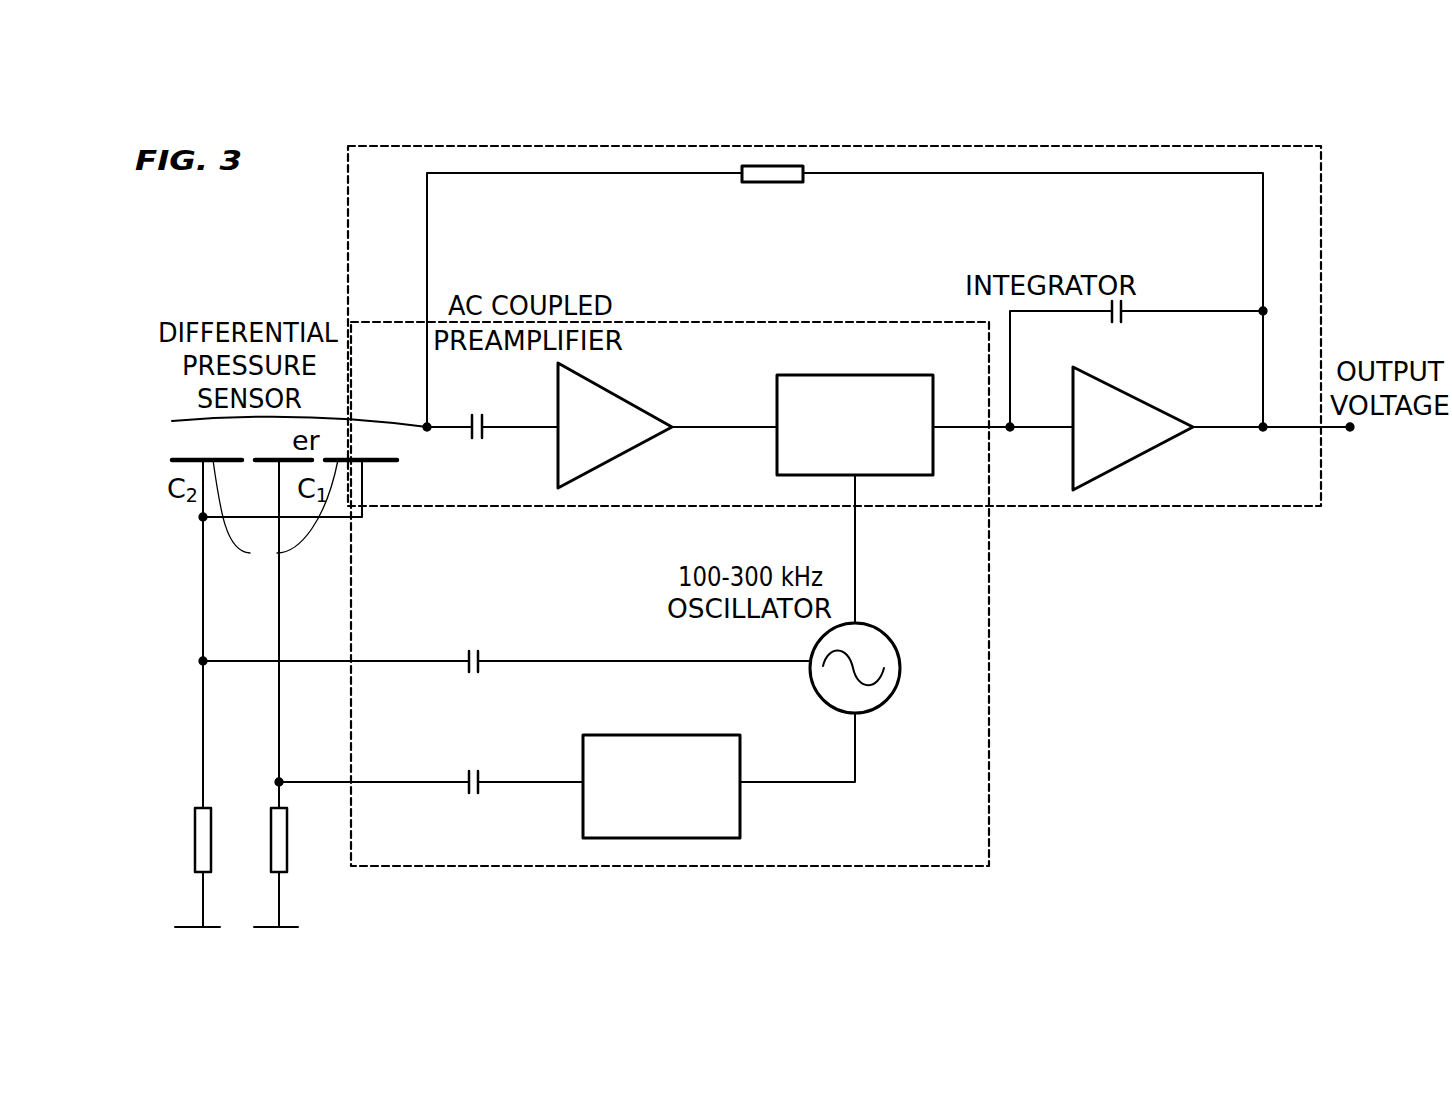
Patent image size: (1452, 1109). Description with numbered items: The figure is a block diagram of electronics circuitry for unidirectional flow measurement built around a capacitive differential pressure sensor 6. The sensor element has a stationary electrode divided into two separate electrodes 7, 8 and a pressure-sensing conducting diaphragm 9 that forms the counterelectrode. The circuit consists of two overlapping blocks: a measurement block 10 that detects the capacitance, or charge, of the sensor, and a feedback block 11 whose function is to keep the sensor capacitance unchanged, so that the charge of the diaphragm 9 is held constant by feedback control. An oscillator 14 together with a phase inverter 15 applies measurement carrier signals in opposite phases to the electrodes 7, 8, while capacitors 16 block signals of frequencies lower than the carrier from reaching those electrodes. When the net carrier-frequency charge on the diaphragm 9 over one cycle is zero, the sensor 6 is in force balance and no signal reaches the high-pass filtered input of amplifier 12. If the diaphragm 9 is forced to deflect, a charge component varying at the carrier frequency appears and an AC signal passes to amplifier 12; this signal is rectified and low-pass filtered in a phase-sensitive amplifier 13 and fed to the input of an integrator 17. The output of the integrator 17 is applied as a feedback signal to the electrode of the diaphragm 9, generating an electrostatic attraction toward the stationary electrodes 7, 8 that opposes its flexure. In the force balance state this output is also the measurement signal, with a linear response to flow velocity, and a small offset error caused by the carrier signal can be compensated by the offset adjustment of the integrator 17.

The capacitive differential pressure sensor 6 is at (265, 587).
The stationary electrode 7 is at (275, 515).
The stationary electrode 8 is at (275, 463).
The pressure-sensing conducting diaphragm 9 is at (172, 420).
The measurement block 10 is at (975, 868).
The feedback block 11 is at (347, 196).
The amplifier 12 is at (641, 405).
The phase-sensitive amplifier 13 is at (933, 410).
The oscillator 14 is at (892, 641).
The phase inverter 15 is at (740, 770).
The capacitors 16 is at (482, 772).
The integrator 17 is at (1148, 405).